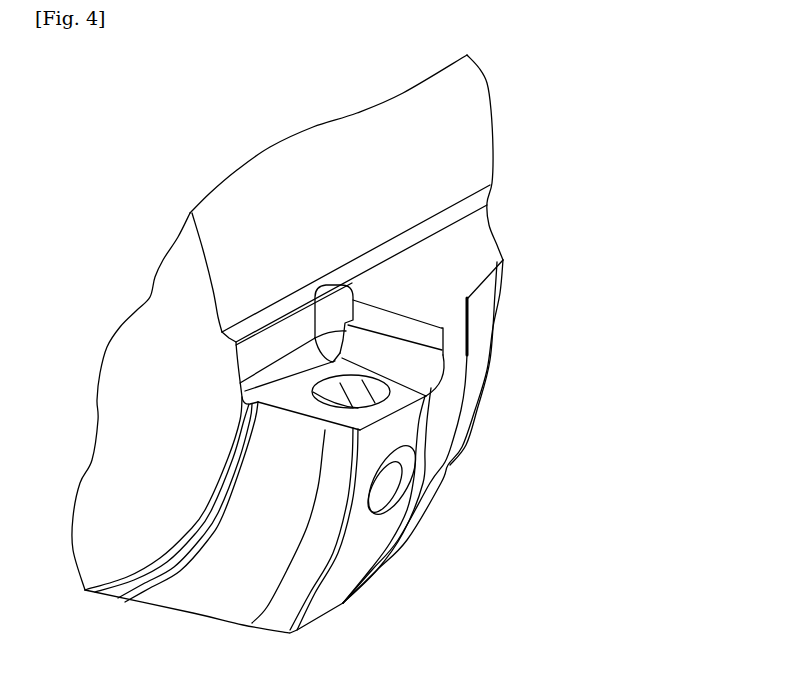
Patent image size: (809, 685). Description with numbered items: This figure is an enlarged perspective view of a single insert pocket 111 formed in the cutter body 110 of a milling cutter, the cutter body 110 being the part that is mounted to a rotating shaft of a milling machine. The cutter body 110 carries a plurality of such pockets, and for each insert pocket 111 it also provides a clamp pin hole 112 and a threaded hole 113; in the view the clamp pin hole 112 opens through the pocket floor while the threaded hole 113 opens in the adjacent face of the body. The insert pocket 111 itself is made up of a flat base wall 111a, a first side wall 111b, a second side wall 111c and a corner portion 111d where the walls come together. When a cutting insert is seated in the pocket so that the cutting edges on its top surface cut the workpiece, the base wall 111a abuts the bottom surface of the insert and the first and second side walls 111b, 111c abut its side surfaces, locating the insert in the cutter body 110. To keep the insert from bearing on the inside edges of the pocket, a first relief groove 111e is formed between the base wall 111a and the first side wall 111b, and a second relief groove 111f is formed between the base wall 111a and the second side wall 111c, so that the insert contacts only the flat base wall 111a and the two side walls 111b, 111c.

The cutter body 110 is at (473, 108).
The insert pocket 111 is at (289, 396).
The base wall 111a is at (307, 412).
The first side wall 111b is at (268, 357).
The second side wall 111c is at (397, 318).
The corner portion 111d is at (332, 343).
The first relief groove 111e is at (278, 375).
The second relief groove 111f is at (420, 367).
The clamp pin hole 112 is at (352, 390).
The threaded hole 113 is at (395, 483).